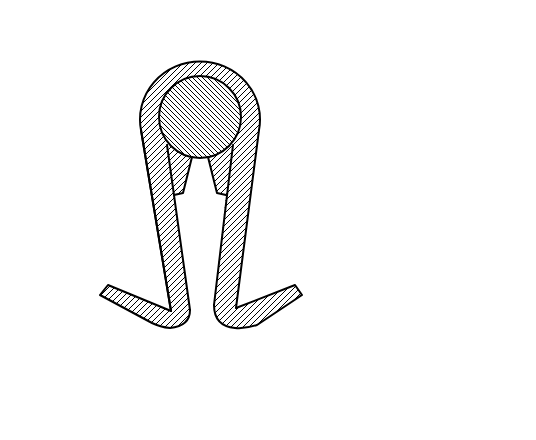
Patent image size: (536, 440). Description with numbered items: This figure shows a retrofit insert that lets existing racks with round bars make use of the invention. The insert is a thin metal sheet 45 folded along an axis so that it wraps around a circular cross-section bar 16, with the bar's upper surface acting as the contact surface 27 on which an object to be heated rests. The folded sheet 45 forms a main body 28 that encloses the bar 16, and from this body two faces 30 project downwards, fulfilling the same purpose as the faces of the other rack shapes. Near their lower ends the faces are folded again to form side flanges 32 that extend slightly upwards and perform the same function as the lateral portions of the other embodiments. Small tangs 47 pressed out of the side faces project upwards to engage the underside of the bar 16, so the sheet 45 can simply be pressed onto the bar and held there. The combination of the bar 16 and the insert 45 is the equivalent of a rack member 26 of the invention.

The circular cross-section bar 16 is at (178, 108).
The member 26 is at (193, 219).
The contact surface 27 is at (200, 60).
The main body 28 is at (236, 72).
The face 30 is at (150, 190).
The side flange 32 is at (125, 315).
The thin metal sheet 45 is at (110, 117).
The tang 47 is at (258, 137).